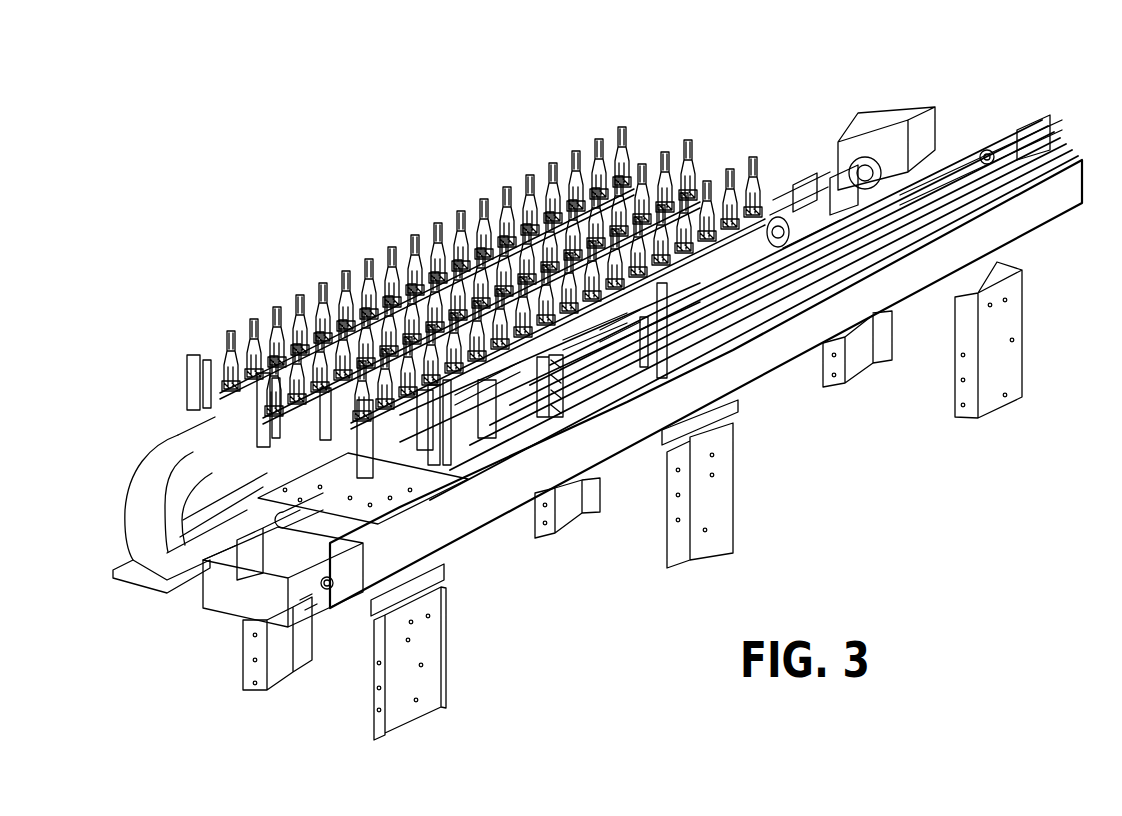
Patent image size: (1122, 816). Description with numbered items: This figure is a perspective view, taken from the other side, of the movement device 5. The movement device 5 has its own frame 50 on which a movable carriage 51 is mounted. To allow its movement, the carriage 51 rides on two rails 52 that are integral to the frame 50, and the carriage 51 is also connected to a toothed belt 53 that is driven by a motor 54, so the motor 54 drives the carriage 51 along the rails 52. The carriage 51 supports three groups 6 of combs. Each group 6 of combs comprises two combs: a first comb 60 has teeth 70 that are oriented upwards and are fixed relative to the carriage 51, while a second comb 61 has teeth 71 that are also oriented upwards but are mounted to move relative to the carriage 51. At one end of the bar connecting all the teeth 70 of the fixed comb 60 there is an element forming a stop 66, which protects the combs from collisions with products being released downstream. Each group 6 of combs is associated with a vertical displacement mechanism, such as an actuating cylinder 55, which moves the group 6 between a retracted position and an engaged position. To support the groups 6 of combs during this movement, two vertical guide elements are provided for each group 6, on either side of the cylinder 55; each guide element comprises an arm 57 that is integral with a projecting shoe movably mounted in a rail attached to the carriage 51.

The movement device 5 is at (838, 528).
The group of combs 6 is at (727, 156).
The frame 50 is at (619, 440).
The carriage 51 is at (358, 534).
The rails 52 is at (1050, 140).
The toothed belt 53 is at (1000, 213).
The motor 54 is at (905, 108).
The actuating cylinder 55 is at (560, 380).
The arm 57 is at (590, 342).
The first comb 60 is at (207, 372).
The second comb 61 is at (280, 432).
The stop 66 is at (243, 336).
The teeth 70 is at (438, 210).
The teeth 71 is at (535, 165).